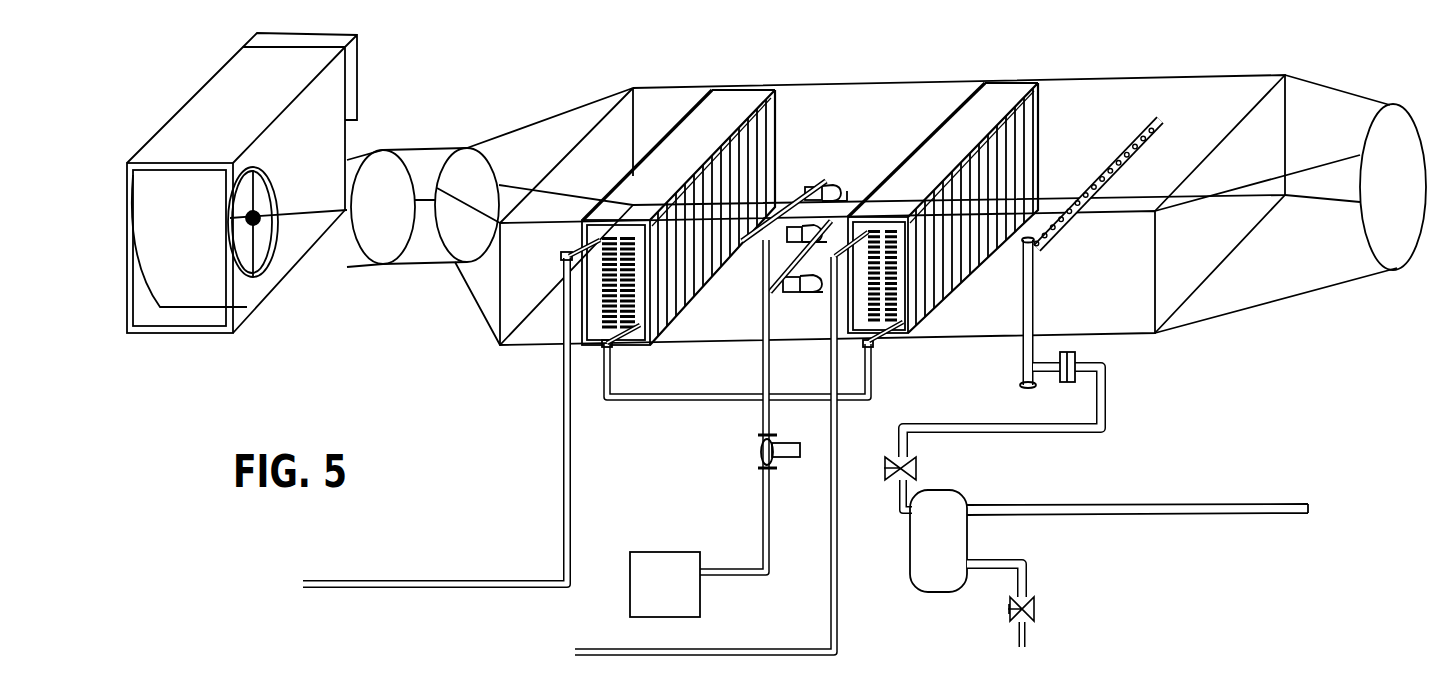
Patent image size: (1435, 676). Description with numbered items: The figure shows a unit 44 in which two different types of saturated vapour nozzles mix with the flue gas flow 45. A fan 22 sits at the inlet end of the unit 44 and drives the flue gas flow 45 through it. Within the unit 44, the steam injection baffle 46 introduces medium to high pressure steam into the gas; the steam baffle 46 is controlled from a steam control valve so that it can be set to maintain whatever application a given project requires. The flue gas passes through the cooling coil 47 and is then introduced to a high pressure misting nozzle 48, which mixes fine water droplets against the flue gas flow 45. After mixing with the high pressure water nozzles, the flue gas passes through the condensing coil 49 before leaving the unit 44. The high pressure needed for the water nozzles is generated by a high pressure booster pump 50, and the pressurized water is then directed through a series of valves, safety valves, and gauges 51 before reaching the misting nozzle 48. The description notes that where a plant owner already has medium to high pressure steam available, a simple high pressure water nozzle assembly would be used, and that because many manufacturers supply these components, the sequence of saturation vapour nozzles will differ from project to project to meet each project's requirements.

The fan 22 is at (202, 157).
The unit 44 is at (542, 127).
The flue gas flow 45 is at (1377, 107).
The steam injection baffle 46 is at (1157, 120).
The cooling coil 47 is at (992, 97).
The high pressure misting nozzle 48 is at (832, 188).
The condensing coil 49 is at (727, 103).
The high pressure booster pump 50 is at (762, 448).
The series of valves, safety valves, and gauges 51 is at (652, 598).